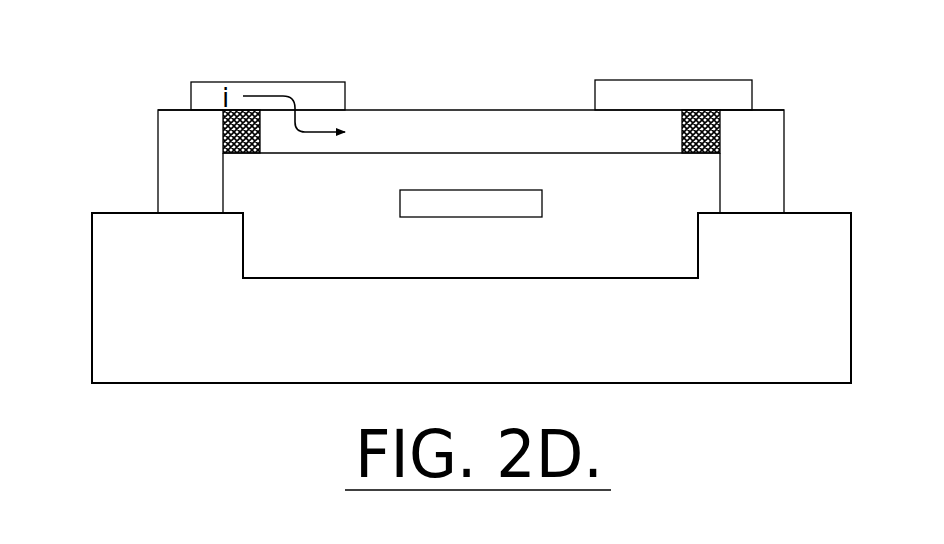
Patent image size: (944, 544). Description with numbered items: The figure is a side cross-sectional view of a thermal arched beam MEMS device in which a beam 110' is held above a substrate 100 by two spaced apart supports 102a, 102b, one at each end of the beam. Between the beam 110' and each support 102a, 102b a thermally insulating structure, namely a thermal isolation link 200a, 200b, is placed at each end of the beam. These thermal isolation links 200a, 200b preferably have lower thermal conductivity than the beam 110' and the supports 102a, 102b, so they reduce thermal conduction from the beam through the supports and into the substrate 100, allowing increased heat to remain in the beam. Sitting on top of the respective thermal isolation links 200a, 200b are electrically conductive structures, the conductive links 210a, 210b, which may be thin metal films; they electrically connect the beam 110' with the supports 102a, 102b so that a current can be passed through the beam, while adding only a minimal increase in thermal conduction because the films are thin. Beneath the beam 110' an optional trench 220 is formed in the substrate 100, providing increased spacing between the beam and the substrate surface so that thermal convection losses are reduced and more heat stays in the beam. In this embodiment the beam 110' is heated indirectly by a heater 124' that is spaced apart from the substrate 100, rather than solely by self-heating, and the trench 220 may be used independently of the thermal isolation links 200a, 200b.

The substrate 100 is at (495, 358).
The spaced apart support 102a is at (175, 128).
The spaced apart support 102b is at (768, 125).
The beam 110' is at (471, 106).
The thermal isolation link 200a is at (250, 157).
The thermal isolation link 200b is at (692, 154).
The conductive link 210a is at (257, 82).
The conductive link 210b is at (685, 80).
The trench 220 is at (495, 260).
The heater 124' is at (568, 234).